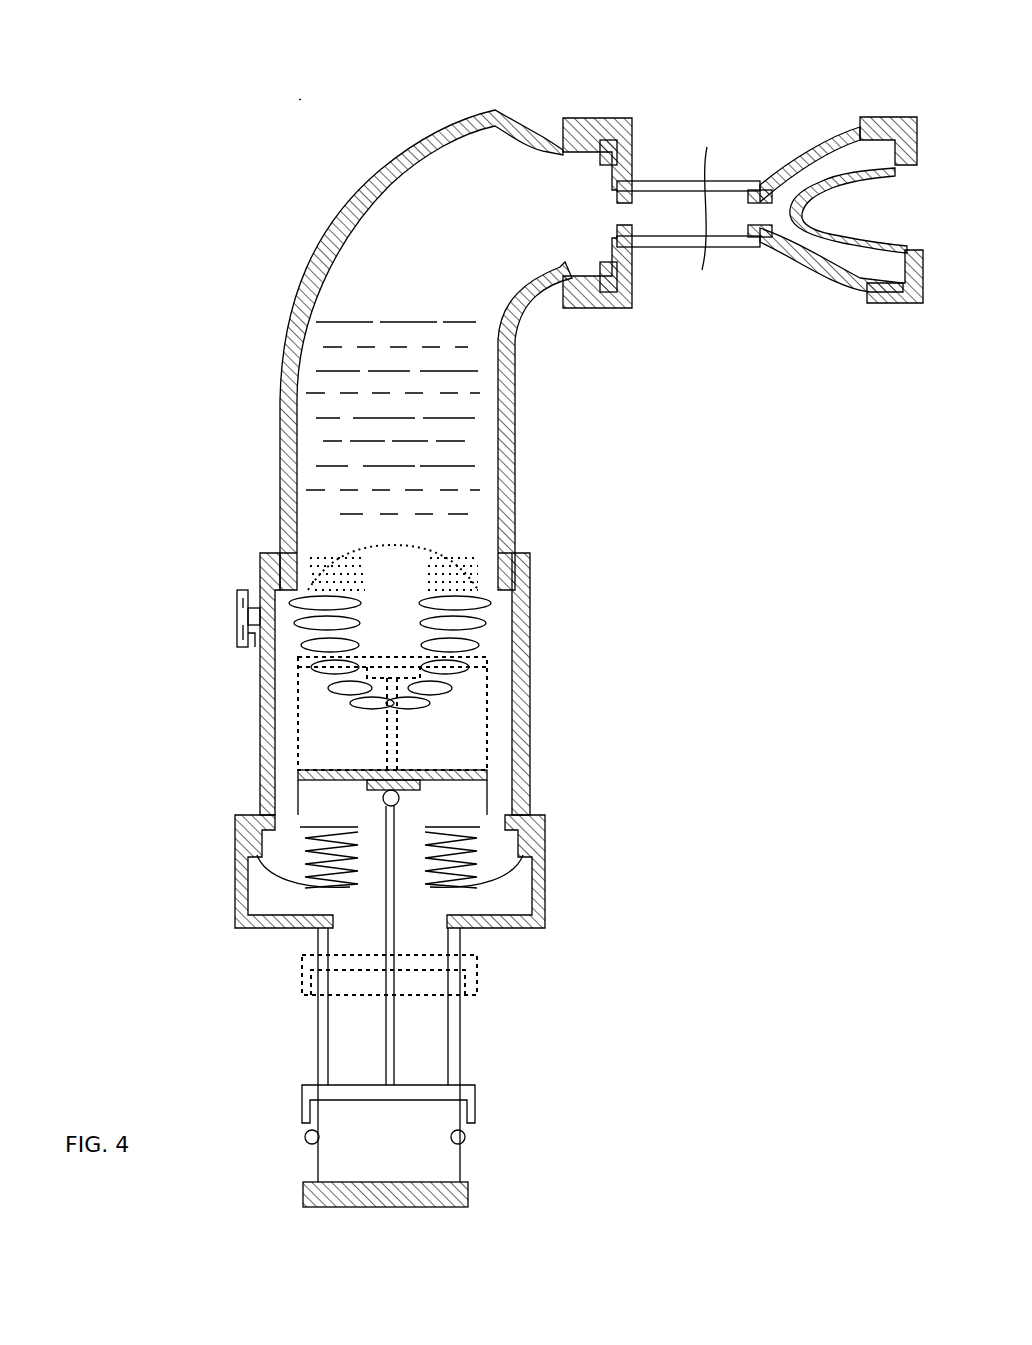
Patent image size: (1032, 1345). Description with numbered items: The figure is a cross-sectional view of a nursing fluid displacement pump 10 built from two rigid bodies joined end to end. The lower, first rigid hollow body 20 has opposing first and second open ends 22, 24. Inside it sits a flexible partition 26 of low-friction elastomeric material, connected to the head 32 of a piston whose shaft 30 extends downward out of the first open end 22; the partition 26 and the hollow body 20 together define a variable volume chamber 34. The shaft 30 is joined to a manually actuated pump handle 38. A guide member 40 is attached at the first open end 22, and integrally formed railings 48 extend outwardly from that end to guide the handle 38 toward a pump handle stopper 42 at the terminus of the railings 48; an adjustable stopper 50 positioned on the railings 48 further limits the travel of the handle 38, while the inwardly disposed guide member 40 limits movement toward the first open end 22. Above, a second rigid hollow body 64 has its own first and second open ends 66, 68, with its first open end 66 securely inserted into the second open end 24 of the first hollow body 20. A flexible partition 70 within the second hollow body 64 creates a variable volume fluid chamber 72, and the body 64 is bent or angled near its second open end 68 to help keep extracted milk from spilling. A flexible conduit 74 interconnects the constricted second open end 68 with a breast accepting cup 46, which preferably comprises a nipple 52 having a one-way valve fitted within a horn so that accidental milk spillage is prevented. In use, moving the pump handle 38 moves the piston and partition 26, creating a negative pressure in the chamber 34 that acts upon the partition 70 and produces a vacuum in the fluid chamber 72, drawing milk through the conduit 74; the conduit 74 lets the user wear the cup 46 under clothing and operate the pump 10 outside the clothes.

The fluid displacement pump 10 is at (301, 99).
The rigid hollow body 20 is at (262, 666).
The first open end 22 is at (513, 878).
The second open end 24 is at (480, 605).
The flexible partition 26 is at (300, 828).
The shaft 30 is at (383, 983).
The head 32 is at (297, 782).
The variable volume chamber 34 is at (313, 730).
The pump handle 38 is at (302, 1093).
The guide member 40 is at (237, 877).
The pump handle stopper 42 is at (468, 1195).
The breast accepting cup 46 is at (823, 140).
The railings 48 is at (450, 1050).
The adjustable stopper 50 is at (465, 1137).
The nipple 52 is at (840, 245).
The second rigid hollow body 64 is at (280, 379).
The first open end 66 is at (330, 516).
The second open end 68 is at (600, 120).
The flexible partition 70 is at (246, 612).
The variable volume fluid chamber 72 is at (357, 321).
The flexible conduit 74 is at (672, 181).